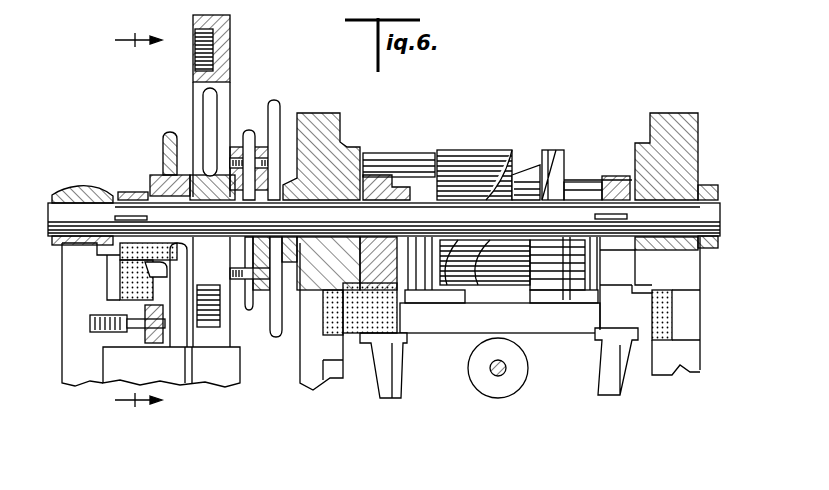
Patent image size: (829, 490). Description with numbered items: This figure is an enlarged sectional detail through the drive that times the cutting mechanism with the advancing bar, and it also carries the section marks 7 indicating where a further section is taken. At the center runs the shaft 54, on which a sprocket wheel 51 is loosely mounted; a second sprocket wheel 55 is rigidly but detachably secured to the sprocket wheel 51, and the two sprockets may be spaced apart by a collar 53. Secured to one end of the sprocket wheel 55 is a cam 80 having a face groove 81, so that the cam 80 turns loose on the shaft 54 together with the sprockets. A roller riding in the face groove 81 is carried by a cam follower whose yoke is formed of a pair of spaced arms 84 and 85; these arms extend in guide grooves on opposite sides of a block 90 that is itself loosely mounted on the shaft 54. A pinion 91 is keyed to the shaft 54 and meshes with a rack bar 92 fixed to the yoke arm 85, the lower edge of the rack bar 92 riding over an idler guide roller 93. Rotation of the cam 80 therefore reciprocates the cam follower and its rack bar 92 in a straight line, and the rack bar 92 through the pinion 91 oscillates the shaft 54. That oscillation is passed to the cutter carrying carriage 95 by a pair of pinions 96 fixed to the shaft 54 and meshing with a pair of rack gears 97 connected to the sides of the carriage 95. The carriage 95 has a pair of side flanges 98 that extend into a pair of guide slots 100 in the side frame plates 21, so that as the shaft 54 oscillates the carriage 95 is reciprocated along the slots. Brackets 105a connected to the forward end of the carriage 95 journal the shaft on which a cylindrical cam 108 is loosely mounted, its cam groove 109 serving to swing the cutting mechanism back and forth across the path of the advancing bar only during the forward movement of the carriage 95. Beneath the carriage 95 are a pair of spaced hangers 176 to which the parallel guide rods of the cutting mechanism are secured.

The section line 7- 7 is at (138, 227).
The side frame plates 21 is at (313, 388).
The sprocket wheel 51 is at (268, 140).
The collar 53 is at (284, 146).
The shaft 54 is at (68, 215).
The sprocket wheel 55 is at (248, 130).
The cam 80 is at (232, 55).
The face groove 81 is at (195, 58).
The yoke arm 84 is at (163, 139).
The yoke arm 85 is at (178, 300).
The block 90 is at (123, 266).
The pinion 91 is at (133, 190).
The rack bar 92 is at (123, 263).
The idler guide roller 93 is at (110, 337).
The cutter carrying carriage 95 is at (405, 328).
The pinions 96 is at (386, 173).
The rack gears 97 is at (365, 267).
The side flanges 98 is at (325, 335).
The guide slots 100 is at (325, 305).
The brackets 105a is at (548, 300).
The cylindrical cam 108 is at (462, 150).
The cam groove 109 is at (528, 163).
The hangers 176 is at (403, 385).